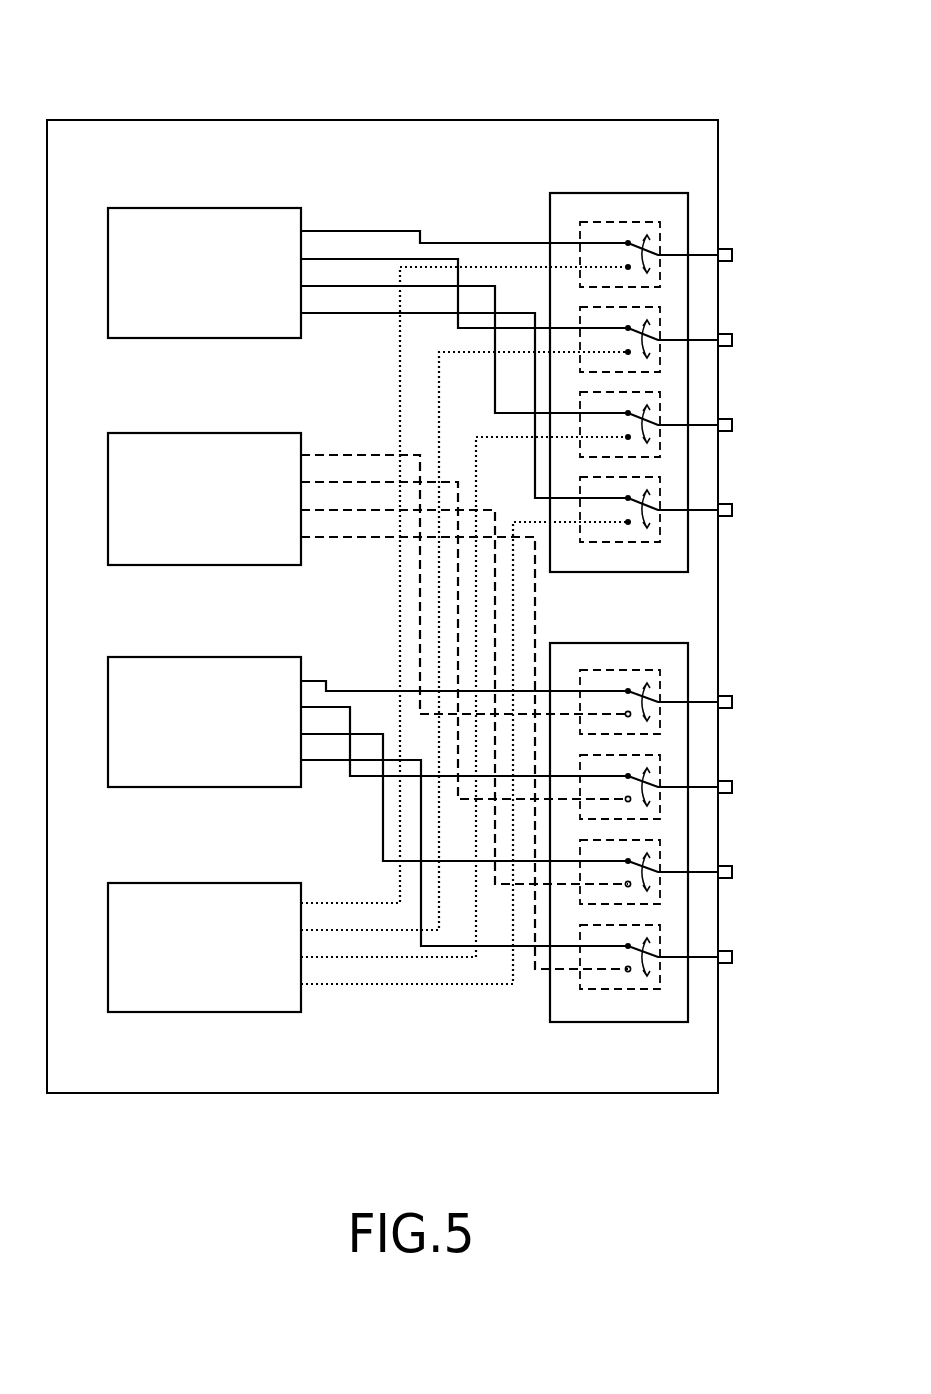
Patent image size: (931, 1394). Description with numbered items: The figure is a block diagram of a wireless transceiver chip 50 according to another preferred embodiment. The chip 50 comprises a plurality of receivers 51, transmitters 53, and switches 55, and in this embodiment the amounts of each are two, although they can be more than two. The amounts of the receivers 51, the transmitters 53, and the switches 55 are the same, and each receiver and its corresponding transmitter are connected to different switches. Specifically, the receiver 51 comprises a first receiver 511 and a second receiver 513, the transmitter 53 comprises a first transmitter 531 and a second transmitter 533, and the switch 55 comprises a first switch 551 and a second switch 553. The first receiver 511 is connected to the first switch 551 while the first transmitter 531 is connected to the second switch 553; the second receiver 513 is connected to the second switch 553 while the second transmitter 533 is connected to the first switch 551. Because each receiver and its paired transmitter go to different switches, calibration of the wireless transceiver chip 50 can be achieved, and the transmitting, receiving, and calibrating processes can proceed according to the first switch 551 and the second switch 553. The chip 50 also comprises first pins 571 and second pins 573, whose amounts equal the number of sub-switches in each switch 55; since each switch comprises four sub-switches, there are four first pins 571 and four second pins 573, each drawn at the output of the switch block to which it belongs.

The wireless transceiver chip 50 is at (90, 52).
The receivers 51 is at (160, 671).
The first receiver 511 is at (208, 212).
The second receiver 513 is at (208, 661).
The transmitters 53 is at (160, 819).
The first transmitter 531 is at (208, 437).
The second transmitter 533 is at (208, 887).
The switches 55 is at (369, 736).
The first switch 551 is at (625, 196).
The second switch 553 is at (625, 646).
The first pin 571 is at (753, 245).
The second pin 573 is at (753, 693).